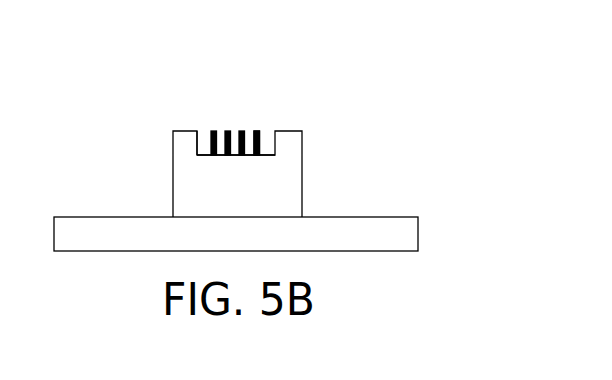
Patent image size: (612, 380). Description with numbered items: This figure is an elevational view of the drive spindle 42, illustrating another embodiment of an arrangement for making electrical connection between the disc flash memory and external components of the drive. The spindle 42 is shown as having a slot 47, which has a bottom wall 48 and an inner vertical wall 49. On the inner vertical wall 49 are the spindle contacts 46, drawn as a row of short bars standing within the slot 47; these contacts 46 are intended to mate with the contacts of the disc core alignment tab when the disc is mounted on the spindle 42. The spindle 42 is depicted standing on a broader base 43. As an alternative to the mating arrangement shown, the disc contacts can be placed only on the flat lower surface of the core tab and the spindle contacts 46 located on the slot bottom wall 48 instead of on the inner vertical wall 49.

The spindle 42 is at (302, 195).
The substrate 43 is at (396, 216).
The spindle contacts 46 is at (258, 132).
The slot 47 is at (235, 112).
The bottom wall 48 is at (223, 157).
The inner vertical wall 49 is at (198, 146).